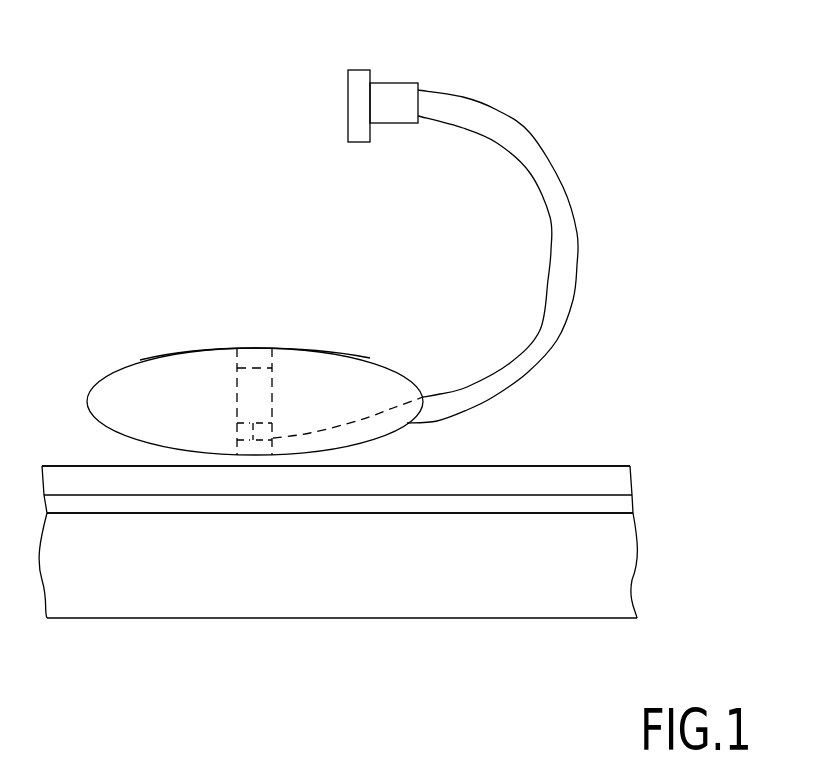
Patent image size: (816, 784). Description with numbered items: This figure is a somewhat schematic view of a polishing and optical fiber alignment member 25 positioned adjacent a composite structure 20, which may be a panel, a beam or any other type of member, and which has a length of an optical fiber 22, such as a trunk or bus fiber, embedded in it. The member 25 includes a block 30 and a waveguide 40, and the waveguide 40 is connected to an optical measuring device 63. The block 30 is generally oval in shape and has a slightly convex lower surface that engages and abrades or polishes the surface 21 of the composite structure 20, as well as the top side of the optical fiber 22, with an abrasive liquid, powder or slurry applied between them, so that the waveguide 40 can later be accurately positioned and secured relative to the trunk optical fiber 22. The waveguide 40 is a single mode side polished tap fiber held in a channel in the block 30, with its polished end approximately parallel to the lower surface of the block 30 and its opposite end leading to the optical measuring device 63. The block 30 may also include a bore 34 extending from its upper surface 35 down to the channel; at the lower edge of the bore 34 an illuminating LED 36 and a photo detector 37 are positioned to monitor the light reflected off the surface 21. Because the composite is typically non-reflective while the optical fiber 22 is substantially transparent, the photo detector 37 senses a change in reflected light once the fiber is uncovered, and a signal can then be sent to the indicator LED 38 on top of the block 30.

The composite structure 20 is at (617, 478).
The surface 21 is at (553, 465).
The optical fiber 22 is at (622, 505).
The polishing and optical fiber alignment member 25 is at (302, 195).
The block 30 is at (147, 358).
The bore 34 is at (240, 402).
The upper surface 35 is at (325, 350).
The illuminating LED 36 is at (245, 433).
The photo detector 37 is at (268, 434).
The indicator LED 38 is at (260, 357).
The waveguide 40 is at (558, 240).
The optical measuring device 63 is at (385, 87).